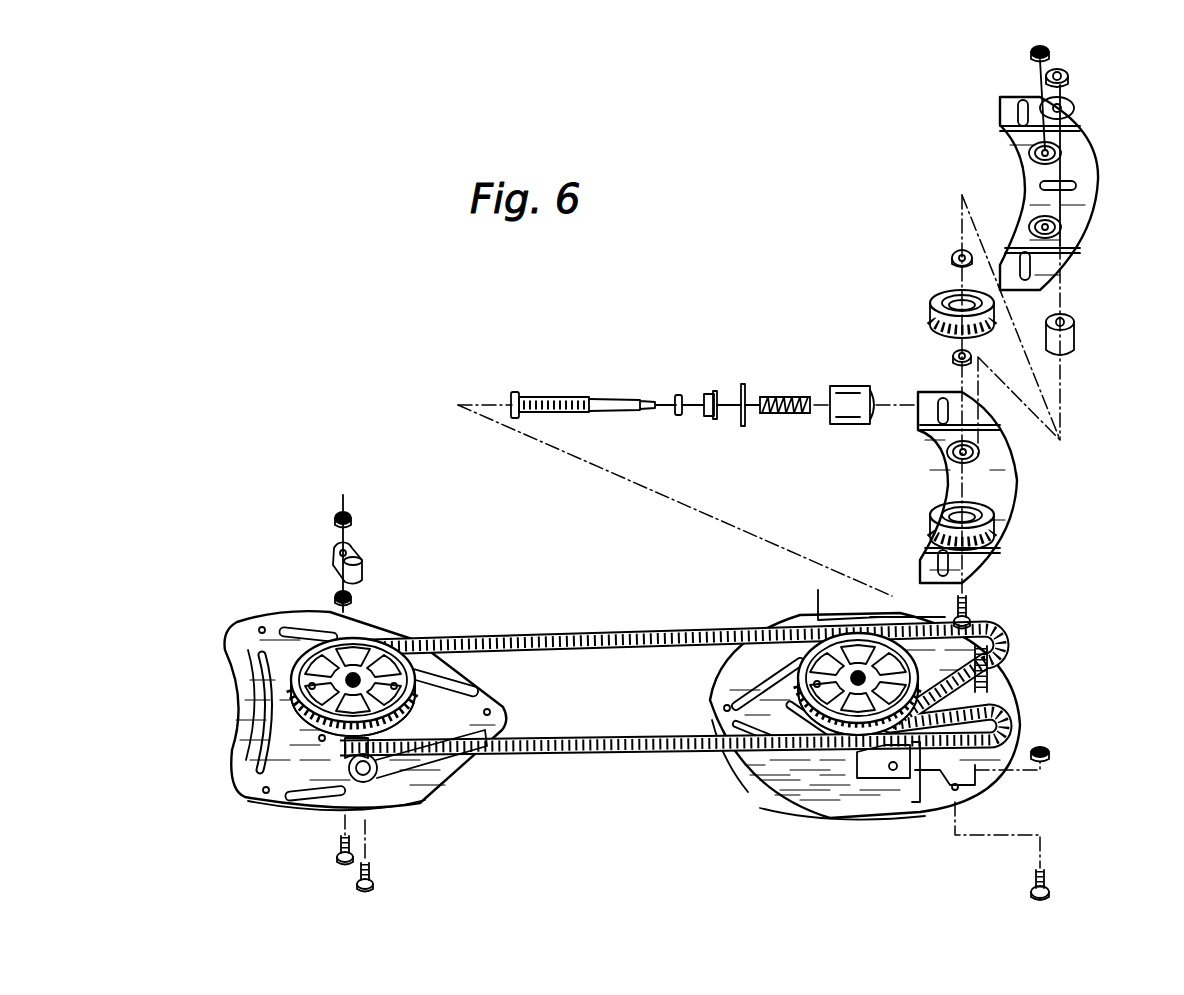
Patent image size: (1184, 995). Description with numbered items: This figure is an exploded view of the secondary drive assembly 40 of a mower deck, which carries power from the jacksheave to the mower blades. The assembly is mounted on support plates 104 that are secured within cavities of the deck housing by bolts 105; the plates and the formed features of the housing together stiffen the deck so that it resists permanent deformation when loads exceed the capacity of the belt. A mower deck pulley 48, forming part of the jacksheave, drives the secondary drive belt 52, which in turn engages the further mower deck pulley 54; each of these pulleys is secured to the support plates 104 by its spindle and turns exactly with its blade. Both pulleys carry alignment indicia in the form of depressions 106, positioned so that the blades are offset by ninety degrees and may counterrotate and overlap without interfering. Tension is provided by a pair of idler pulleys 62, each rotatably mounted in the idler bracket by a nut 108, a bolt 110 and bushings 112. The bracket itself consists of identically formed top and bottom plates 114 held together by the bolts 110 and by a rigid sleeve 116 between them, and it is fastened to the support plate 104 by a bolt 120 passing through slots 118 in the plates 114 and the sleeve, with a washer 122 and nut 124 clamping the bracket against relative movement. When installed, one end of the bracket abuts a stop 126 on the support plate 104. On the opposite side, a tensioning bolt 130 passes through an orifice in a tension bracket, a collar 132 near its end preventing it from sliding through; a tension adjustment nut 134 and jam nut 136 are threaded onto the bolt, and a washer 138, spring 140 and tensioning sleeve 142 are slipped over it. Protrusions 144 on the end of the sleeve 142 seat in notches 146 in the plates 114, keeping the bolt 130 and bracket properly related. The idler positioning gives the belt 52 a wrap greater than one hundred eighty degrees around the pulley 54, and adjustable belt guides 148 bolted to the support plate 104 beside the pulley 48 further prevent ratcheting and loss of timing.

The secondary drive assembly 40 is at (672, 772).
The mower deck pulley 48 is at (338, 648).
The secondary drive belt 52 is at (626, 750).
The further mower deck pulley 54 is at (815, 640).
The secondary drive idler pulley 62 is at (940, 298).
The support plate 104 is at (266, 705).
The bolt 105 is at (1046, 880).
The depression 106 is at (372, 660).
The nut 108 is at (1052, 52).
The bolt 110 is at (975, 600).
The bushing 112 is at (958, 250).
The top and bottom plates 114 is at (1017, 468).
The rigid sleeve 116 is at (1075, 334).
The slot 118 is at (1080, 192).
The bolt 120 is at (1000, 702).
The washer 122 is at (1075, 108).
The nut 124 is at (1070, 78).
The stop 126 is at (900, 780).
The tensioning bolt 130 is at (586, 396).
The collar 132 is at (515, 392).
The tension adjustment nut 134 is at (712, 392).
The jam nut 136 is at (678, 394).
The washer 138 is at (743, 426).
The spring 140 is at (786, 396).
The tensioning sleeve 142 is at (852, 386).
The protrusion 144 is at (876, 396).
The notch 146 is at (916, 408).
The adjustable belt guide 148 is at (362, 570).